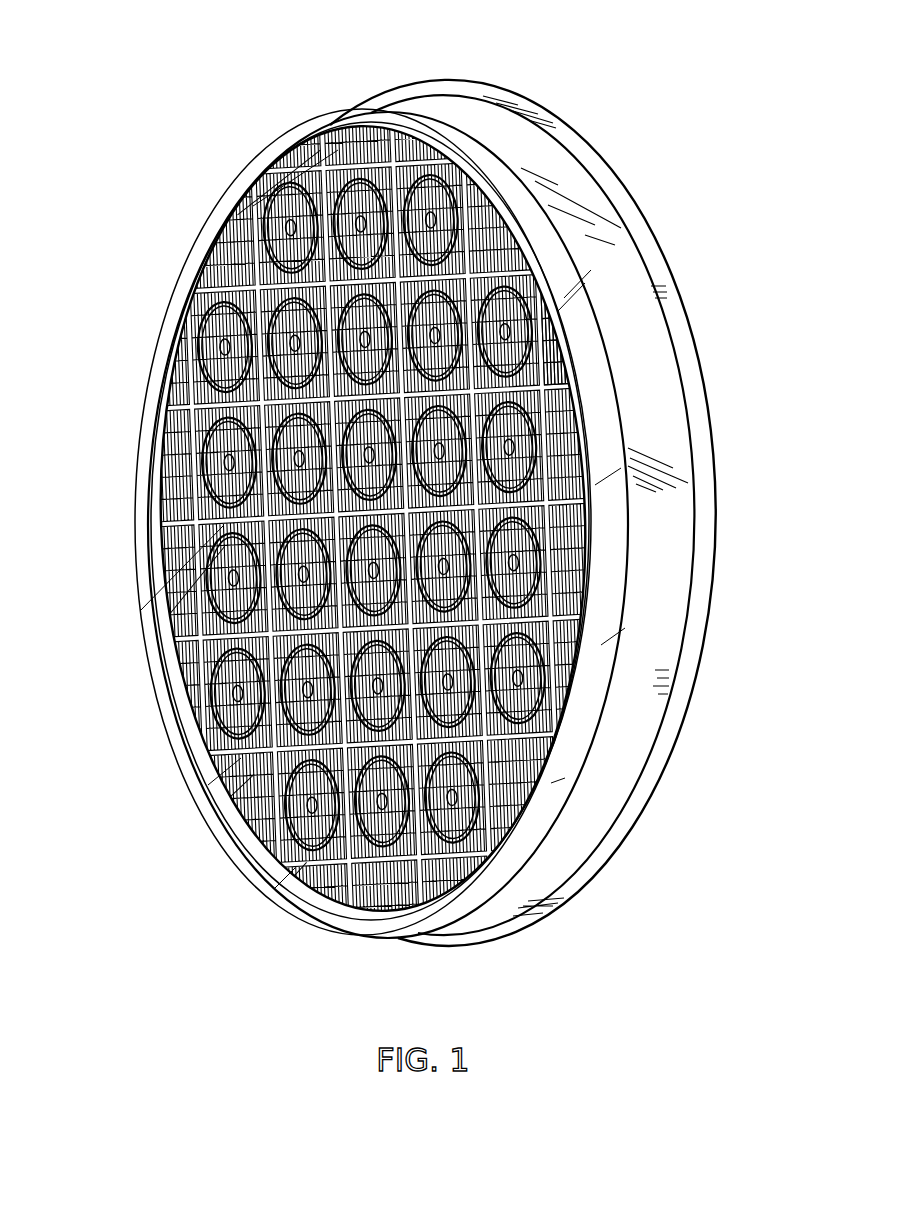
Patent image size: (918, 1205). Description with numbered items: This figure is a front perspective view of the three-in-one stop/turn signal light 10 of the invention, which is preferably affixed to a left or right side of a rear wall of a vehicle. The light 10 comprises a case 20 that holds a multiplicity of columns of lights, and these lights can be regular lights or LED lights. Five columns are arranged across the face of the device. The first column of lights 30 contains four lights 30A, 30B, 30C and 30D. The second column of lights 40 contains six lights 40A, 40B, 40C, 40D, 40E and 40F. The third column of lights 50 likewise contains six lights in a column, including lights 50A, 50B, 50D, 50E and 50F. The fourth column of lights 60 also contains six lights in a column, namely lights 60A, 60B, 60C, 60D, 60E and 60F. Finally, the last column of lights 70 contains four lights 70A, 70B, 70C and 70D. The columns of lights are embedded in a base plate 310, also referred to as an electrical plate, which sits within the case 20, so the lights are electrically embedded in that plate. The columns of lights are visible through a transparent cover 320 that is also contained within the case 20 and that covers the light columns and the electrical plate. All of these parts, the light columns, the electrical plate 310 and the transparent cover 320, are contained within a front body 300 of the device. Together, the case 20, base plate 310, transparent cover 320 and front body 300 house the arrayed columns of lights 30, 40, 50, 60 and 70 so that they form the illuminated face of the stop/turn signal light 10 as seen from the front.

The light 10 is at (598, 108).
The case 20 is at (568, 184).
The first column of lights 30 is at (200, 298).
The light 30A is at (200, 343).
The light 30B is at (205, 455).
The light 30C is at (215, 575).
The light 30D is at (210, 690).
The second column of lights 40 is at (300, 160).
The light 40A is at (262, 208).
The light 40B is at (240, 279).
The light 40C is at (210, 405).
The light 40D is at (215, 520).
The light 40E is at (215, 628).
The light 40F is at (280, 794).
The third column of lights 50 is at (332, 152).
The light 50A is at (366, 165).
The light 50B is at (527, 250).
The light 50D is at (593, 478).
The light 50E is at (593, 600).
The light 50F is at (575, 748).
The fourth column of lights 60 is at (419, 150).
The light 60A is at (515, 202).
The light 60B is at (535, 263).
The light 60C is at (592, 385).
The light 60D is at (580, 498).
The light 60E is at (580, 612).
The light 60F is at (545, 785).
The last column of lights 70 is at (545, 272).
The light 70A is at (550, 306).
The light 70B is at (580, 436).
The light 70C is at (617, 566).
The light 70D is at (620, 685).
The front body 300 is at (428, 905).
The base plate 310 is at (180, 317).
The transparent cover 320 is at (500, 818).